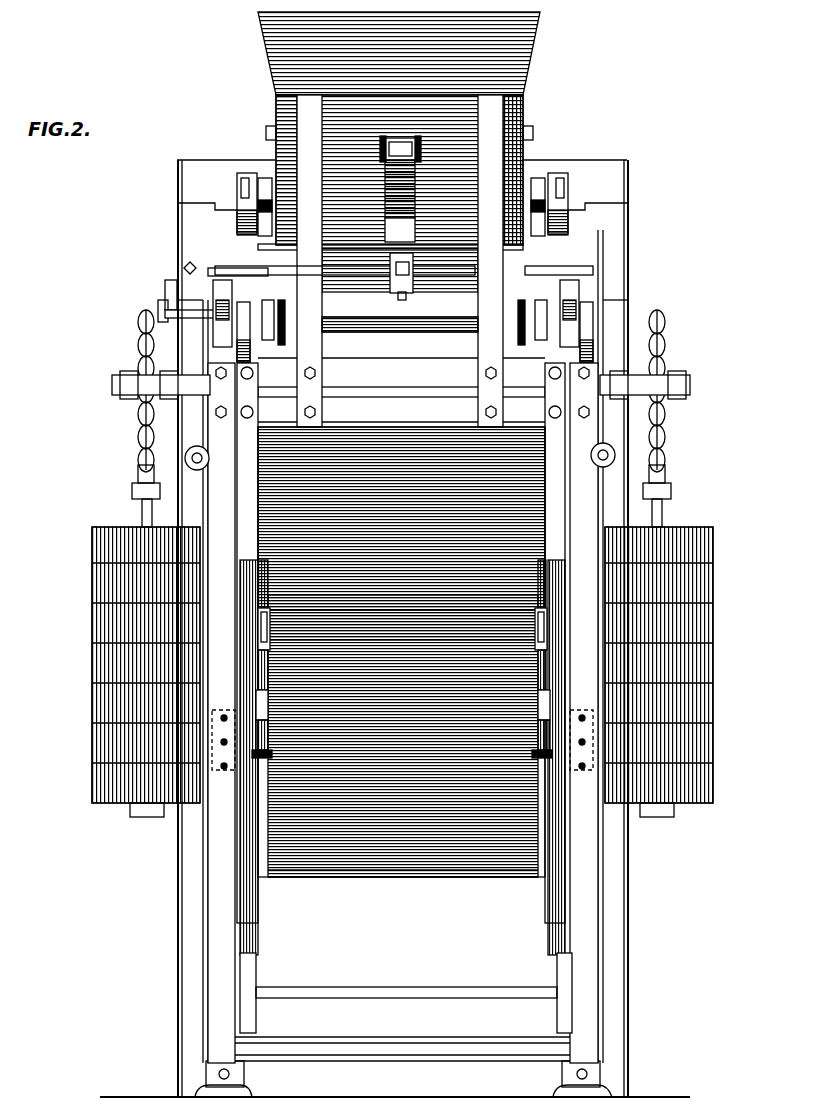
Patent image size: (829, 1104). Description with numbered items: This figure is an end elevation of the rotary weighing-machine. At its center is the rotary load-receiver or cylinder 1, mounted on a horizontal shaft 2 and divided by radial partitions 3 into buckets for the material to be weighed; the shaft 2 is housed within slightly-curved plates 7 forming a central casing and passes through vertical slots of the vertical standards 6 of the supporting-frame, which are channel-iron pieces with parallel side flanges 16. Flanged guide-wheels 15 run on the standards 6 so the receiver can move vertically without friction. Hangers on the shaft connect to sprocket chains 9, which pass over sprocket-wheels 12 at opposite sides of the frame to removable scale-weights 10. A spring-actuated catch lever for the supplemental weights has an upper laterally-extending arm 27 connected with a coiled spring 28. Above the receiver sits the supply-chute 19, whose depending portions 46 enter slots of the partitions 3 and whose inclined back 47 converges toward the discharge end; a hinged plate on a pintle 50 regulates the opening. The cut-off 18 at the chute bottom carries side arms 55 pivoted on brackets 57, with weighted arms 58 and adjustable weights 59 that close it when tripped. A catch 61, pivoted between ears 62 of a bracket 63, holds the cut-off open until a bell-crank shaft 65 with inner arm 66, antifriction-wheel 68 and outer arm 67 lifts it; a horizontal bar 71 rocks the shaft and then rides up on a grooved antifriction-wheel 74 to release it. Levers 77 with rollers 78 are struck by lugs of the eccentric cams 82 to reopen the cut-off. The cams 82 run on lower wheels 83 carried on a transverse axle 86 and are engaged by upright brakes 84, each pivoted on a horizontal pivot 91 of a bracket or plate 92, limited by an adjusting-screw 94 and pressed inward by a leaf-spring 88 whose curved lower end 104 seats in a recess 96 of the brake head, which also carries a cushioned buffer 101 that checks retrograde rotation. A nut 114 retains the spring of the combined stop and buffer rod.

The rotary load-receiver or cylinder 1 is at (376, 858).
The horizontal shaft 2 is at (204, 640).
The radial partitions 3 is at (430, 886).
The vertical standards or guides 6 is at (177, 842).
The slightly-curved plates 7 is at (438, 585).
The chains 9 is at (138, 332).
The scale-weights 10 is at (108, 585).
The sprocket-wheels 12 is at (140, 348).
The guide-wheels 15 is at (204, 575).
The parallel side flanges 16 is at (183, 892).
The cut-off 18 is at (398, 322).
The supply-chute 19 is at (280, 40).
The upper laterally-extending arm 27 is at (150, 472).
The coiled spring 28 is at (132, 484).
The depending portions 46 is at (283, 340).
The bottom or back of supply-chute 47 is at (448, 232).
The shaft or pintle 50 is at (534, 134).
The upwardly-extending arms 55 is at (274, 228).
The plates or brackets 57 is at (262, 180).
The weighted arms 58 is at (243, 175).
The adjustable weights 59 is at (237, 192).
The catch 61 is at (383, 148).
The ears 62 is at (400, 138).
The bracket 63 is at (386, 180).
The shaft of bell-crank 65 is at (345, 278).
The inner centrally-arranged arm 66 is at (392, 272).
The outer arm 67 is at (206, 270).
The antifriction-wheel 68 is at (404, 288).
The substantially horizontal bar 71 is at (167, 290).
The grooved antifriction-wheel 74 is at (160, 302).
The levers 77 is at (232, 318).
The antifriction wheels or rollers 78 is at (590, 345).
The eccentrically-arranged cams 82 is at (276, 325).
The lower wheels 83 is at (250, 975).
The brakes 84 is at (266, 702).
The transverse shaft or axle 86 is at (325, 986).
The leaf-spring 88 is at (247, 505).
The horizontal pivot 91 is at (272, 755).
The bracket or plate 92 is at (224, 772).
The adjusting-screw 94 is at (266, 728).
The intervening space or recess 96 is at (268, 642).
The cushioned stop or buffer 101 is at (268, 620).
The lower end of leaf-spring 104 is at (540, 655).
The nut 114 is at (210, 460).